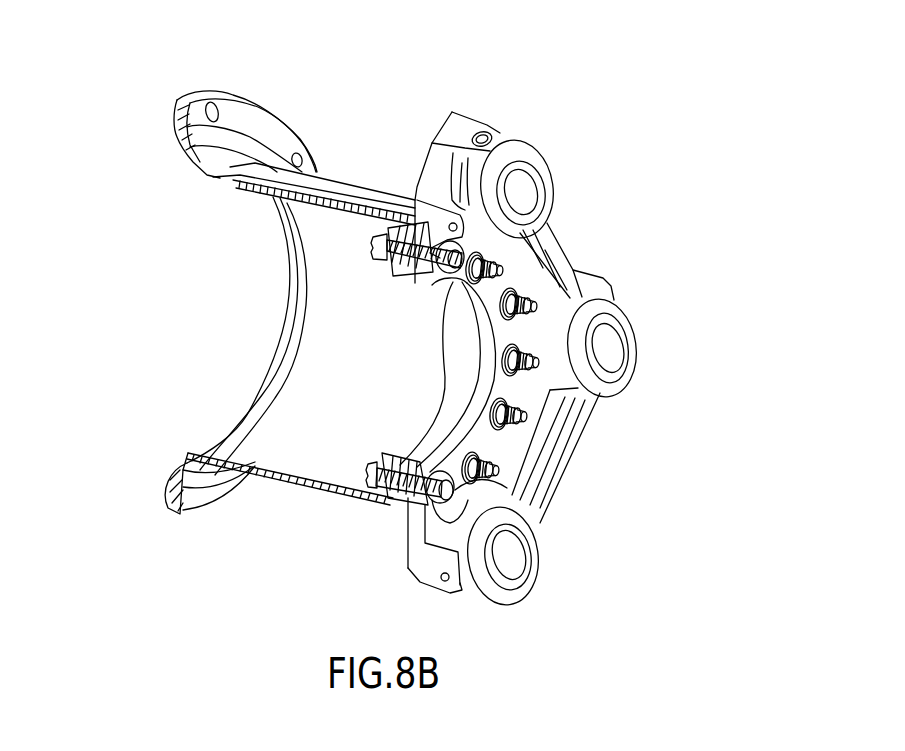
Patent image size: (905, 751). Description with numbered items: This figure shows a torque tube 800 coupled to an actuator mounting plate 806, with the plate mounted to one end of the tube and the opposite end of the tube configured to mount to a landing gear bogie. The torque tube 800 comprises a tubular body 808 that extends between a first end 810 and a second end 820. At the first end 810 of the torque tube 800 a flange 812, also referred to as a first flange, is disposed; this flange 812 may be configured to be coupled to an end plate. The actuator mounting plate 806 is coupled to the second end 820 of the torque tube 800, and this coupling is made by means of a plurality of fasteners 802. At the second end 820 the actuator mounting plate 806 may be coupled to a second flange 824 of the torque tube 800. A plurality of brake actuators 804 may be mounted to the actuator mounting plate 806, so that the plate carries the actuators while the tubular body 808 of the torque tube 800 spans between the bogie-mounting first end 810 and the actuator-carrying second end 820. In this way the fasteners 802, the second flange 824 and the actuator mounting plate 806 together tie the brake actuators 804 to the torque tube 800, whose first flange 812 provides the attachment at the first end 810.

The torque tube 800 is at (350, 105).
The fasteners 802 is at (502, 478).
The brake actuators 804 is at (608, 352).
The actuator mounting plate 806 is at (565, 435).
The tubular body 808 is at (367, 185).
The first end 810 is at (276, 110).
The flange 812 is at (177, 143).
The second end 820 is at (408, 457).
The flange 824 is at (390, 280).